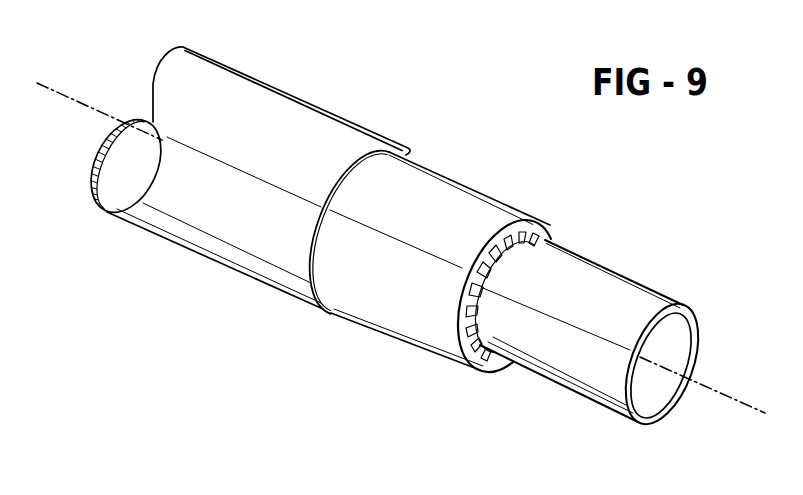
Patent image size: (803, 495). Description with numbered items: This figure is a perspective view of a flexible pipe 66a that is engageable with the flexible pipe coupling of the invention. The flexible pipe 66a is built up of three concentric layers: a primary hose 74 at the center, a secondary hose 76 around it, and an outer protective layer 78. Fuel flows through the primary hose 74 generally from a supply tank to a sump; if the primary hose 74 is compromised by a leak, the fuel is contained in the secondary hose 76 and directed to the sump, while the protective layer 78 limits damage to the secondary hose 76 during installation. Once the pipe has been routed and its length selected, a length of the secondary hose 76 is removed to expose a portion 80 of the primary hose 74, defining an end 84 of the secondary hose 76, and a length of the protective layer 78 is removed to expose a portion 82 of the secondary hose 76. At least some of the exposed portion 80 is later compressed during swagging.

The flexible pipe 66a is at (637, 232).
The primary hose 74 is at (532, 387).
The secondary hose 76 is at (342, 332).
The protective layer 78 is at (323, 124).
The portion of the primary hose 80 is at (629, 308).
The portion of the secondary hose 82 is at (450, 193).
The end of the secondary hose 84 is at (549, 224).